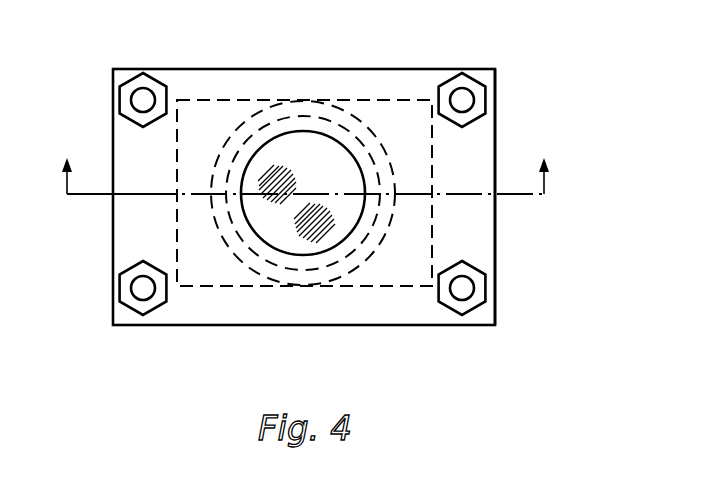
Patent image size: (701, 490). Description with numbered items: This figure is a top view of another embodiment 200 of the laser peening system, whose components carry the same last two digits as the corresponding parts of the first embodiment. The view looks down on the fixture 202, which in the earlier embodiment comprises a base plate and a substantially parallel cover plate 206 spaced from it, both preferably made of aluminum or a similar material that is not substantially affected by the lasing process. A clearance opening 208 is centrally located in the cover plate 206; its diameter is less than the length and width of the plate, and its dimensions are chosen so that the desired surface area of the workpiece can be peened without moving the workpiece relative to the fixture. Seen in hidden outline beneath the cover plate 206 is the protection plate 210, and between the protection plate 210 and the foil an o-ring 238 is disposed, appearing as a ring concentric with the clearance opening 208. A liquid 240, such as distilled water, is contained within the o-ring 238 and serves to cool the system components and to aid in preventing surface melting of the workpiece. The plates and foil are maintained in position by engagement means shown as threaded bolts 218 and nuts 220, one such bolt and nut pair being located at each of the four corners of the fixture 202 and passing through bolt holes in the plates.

The embodiment of the laser peening system 200 is at (618, 46).
The fixture 202 is at (339, 197).
The cover plate 206 is at (527, 197).
The clearance opening 208 is at (277, 198).
The protection plate 210 is at (256, 100).
The threaded bolts 218 is at (308, 169).
The nuts 220 is at (308, 175).
The o-ring 238 is at (319, 193).
The liquid 240 is at (280, 264).